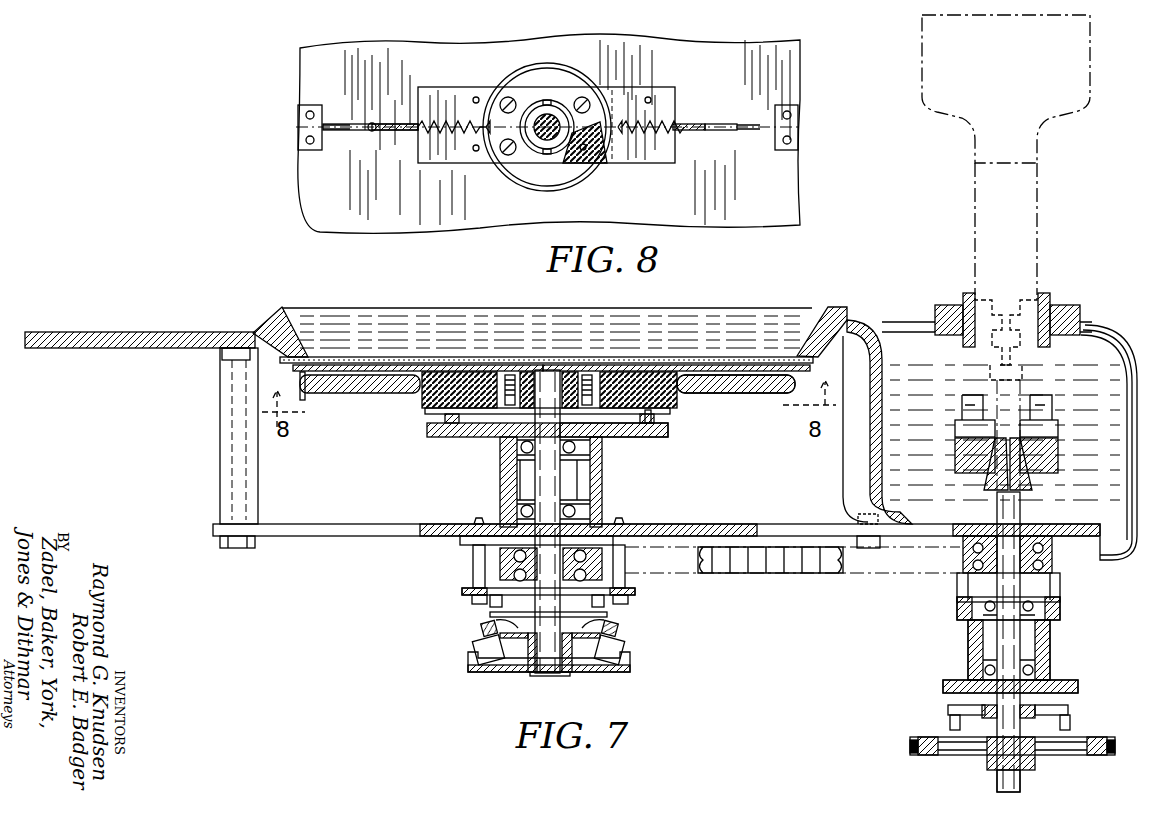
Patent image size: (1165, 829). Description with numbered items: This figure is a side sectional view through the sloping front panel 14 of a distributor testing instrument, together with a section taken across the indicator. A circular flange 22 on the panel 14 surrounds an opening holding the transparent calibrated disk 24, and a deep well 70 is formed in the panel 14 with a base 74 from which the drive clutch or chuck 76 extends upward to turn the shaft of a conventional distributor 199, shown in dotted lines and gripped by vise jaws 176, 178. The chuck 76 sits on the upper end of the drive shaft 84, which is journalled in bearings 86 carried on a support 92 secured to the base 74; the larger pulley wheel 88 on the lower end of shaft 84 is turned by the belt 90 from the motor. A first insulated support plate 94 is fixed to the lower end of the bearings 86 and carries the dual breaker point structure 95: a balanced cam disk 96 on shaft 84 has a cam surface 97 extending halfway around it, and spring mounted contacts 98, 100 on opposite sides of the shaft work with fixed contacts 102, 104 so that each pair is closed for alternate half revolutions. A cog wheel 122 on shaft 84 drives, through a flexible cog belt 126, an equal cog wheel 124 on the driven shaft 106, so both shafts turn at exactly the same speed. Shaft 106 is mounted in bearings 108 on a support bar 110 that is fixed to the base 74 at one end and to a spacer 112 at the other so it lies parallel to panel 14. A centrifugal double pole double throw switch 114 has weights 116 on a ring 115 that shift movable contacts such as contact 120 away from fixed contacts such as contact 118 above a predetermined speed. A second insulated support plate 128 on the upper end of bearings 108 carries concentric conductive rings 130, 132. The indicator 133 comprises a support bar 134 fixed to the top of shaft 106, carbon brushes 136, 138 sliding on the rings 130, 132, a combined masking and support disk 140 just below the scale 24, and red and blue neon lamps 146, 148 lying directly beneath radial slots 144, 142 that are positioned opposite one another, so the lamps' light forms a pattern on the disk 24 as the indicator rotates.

In FIG. 7, the front panel 14 is at (165, 332).
In FIG. 7, the circular flange 22 is at (835, 310).
In FIG. 7, the transparent disk 24 is at (702, 357).
In FIG. 7, the well 70 is at (1098, 356).
In FIG. 7, the base of well 74 is at (1068, 526).
In FIG. 7, the clutch or chuck 76 is at (1070, 466).
In FIG. 7, the drive shaft 84 is at (1022, 788).
In FIG. 7, the bearings 86 is at (1050, 638).
In FIG. 7, the pulley wheel 88 is at (1113, 755).
In FIG. 7, the belt 90 is at (910, 745).
In FIG. 7, the support 92 is at (957, 583).
In FIG. 7, the first insulated support plate 94 is at (1078, 688).
In FIG. 7, the dual breaker point structure 95 is at (914, 665).
In FIG. 7, the cam disk 96 is at (1030, 718).
In FIG. 7, the cam surface 97 is at (990, 718).
In FIG. 7, the spring mounted electrical contact 98 is at (948, 710).
In FIG. 7, the spring mounted electrical contact 100 is at (1068, 710).
In FIG. 7, the fixed contact 102 is at (950, 724).
In FIG. 7, the fixed contact 104 is at (1070, 724).
In FIG. 8, the driven shaft 106 is at (540, 137).
In FIG. 7, the driven shaft 106 is at (551, 487).
In FIG. 7, the bearings 108 is at (500, 480).
In FIG. 7, the support bar 110 is at (332, 537).
In FIG. 7, the spacer 112 is at (220, 490).
In FIG. 7, the centrifugal double pole double throw switch 114 is at (412, 540).
In FIG. 7, the ring 115 is at (607, 614).
In FIG. 7, the weights 116 is at (478, 642).
In FIG. 7, the fixed contact 118 is at (612, 603).
In FIG. 7, the movable contact 120 is at (490, 603).
In FIG. 7, the cog wheel 122 is at (1055, 560).
In FIG. 7, the cog wheel 124 is at (500, 562).
In FIG. 7, the cog belt 126 is at (800, 573).
In FIG. 7, the second insulated support plate 128 is at (442, 438).
In FIG. 7, the conductive ring 130 is at (450, 422).
In FIG. 7, the conductive ring 132 is at (616, 438).
In FIG. 7, the indicator 133 is at (707, 427).
In FIG. 8, the support bar 134 is at (432, 165).
In FIG. 7, the support bar 134 is at (424, 400).
In FIG. 8, the brush 136 is at (477, 151).
In FIG. 7, the brush 136 is at (440, 414).
In FIG. 8, the brush 138 is at (650, 100).
In FIG. 7, the brush 138 is at (650, 438).
In FIG. 8, the masking and support disk 140 is at (490, 61).
In FIG. 7, the masking and support disk 140 is at (300, 374).
In FIG. 8, the slot 142 is at (735, 131).
In FIG. 7, the slot 142 is at (730, 365).
In FIG. 8, the slot 144 is at (340, 132).
In FIG. 7, the slot 144 is at (350, 366).
In FIG. 8, the neon lamp 146 is at (372, 131).
In FIG. 7, the neon lamp 146 is at (307, 410).
In FIG. 8, the neon lamp 148 is at (700, 134).
In FIG. 7, the neon lamp 148 is at (772, 394).
In FIG. 7, the vise jaw 176 is at (1062, 293).
In FIG. 7, the vise jaw 178 is at (965, 293).
In FIG. 7, the distributor 199 is at (1101, 62).